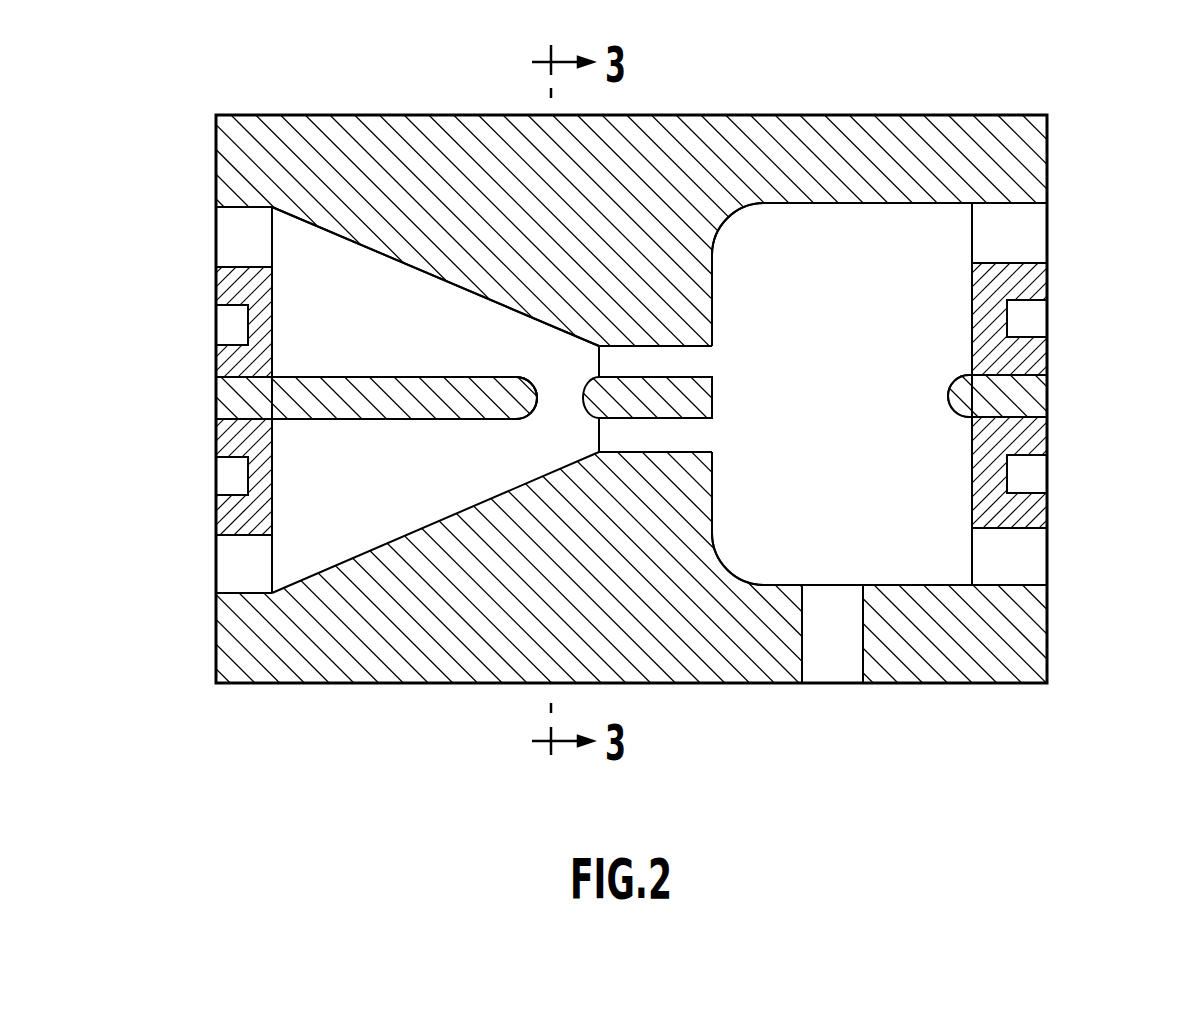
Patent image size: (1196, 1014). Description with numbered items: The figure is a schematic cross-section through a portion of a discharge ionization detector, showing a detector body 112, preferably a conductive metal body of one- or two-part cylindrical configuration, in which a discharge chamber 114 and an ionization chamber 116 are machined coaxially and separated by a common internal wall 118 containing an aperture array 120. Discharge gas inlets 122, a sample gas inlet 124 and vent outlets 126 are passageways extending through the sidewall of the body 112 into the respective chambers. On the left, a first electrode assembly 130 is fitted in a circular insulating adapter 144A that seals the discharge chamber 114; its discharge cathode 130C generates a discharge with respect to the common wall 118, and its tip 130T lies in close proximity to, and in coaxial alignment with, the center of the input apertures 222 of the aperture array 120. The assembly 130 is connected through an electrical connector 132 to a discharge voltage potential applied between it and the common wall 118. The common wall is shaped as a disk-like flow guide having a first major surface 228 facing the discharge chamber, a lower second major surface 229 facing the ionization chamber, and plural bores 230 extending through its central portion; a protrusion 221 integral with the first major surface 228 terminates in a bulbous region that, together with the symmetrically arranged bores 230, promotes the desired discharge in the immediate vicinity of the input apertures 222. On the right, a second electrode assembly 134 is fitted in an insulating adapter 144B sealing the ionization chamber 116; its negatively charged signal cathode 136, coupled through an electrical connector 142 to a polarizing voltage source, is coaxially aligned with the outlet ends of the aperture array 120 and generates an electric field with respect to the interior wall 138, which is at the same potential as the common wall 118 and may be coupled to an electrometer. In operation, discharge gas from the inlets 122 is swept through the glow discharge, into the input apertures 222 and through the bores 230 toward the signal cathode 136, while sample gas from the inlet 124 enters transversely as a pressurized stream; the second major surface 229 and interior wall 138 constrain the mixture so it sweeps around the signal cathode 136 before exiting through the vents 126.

The detector body 112 is at (862, 115).
The discharge chamber 114 is at (340, 360).
The ionization chamber 116 is at (945, 277).
The common internal wall 118 is at (667, 157).
The aperture array 120 is at (735, 443).
The discharge gas inlets 122 is at (237, 246).
The sample gas inlet 124 is at (823, 665).
The vent outlets 126 is at (1036, 240).
The first electrode assembly 130 is at (315, 470).
The discharge cathode 130C is at (405, 420).
The tip of first electrode assembly 130T is at (537, 385).
The electrical connector 132 is at (216, 405).
The second electrode assembly 134 is at (925, 460).
The signal cathode 136 is at (948, 388).
The interior wall of ionization chamber 138 is at (733, 225).
The electrical connector 142 is at (1042, 395).
The insulating adapter 144A is at (216, 291).
The insulating adapter 144B is at (1047, 290).
The protrusion 221 is at (599, 366).
The input aperture 222 is at (599, 441).
The first major surface 228 is at (381, 253).
The second major surface 229 is at (715, 540).
The bores 230 is at (668, 346).